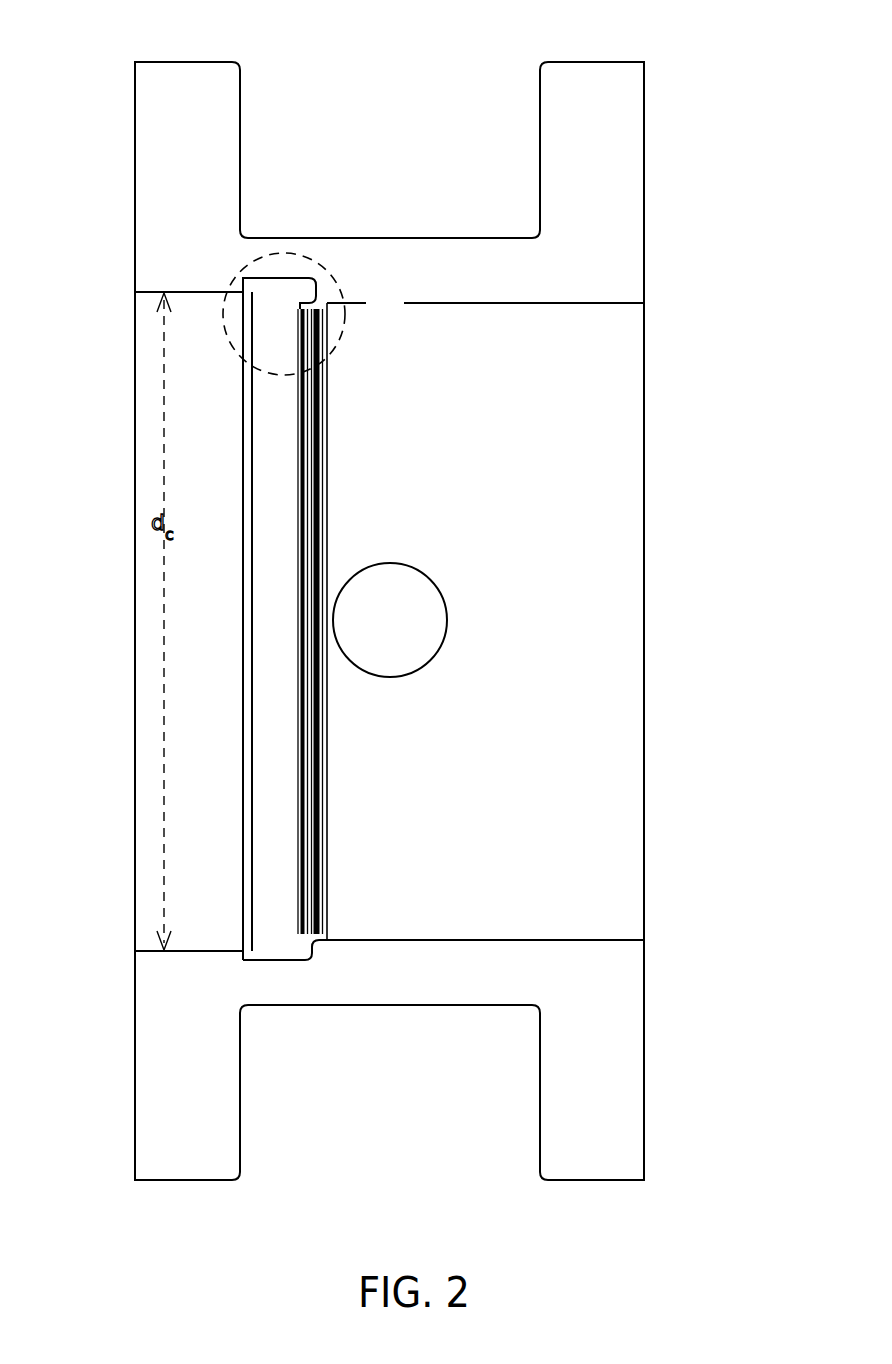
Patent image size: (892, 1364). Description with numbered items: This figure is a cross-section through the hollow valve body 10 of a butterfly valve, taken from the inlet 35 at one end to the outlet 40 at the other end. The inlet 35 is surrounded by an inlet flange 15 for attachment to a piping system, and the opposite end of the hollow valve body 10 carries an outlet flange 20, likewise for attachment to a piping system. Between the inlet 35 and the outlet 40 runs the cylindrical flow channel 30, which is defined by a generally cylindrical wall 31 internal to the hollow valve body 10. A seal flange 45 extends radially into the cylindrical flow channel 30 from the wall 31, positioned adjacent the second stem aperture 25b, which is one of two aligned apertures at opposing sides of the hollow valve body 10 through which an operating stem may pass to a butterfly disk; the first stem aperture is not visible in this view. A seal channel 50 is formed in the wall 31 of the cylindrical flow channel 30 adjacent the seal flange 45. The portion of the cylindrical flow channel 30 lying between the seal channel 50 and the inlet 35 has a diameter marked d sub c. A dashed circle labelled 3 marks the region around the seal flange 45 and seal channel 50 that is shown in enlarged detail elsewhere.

The hollow valve body 10 is at (458, 237).
The inlet flange 15 is at (134, 62).
The outlet flange 20 is at (645, 62).
The cylindrical flow channel 30 is at (490, 529).
The wall of the cylindrical flow channel 31 is at (210, 294).
The inlet 35 is at (134, 568).
The outlet 40 is at (648, 665).
The seal flange 45 is at (326, 832).
The seal channel 50 is at (283, 962).
The second stem aperture 25b is at (413, 673).
The detail circle for FIG. 3 is at (346, 311).